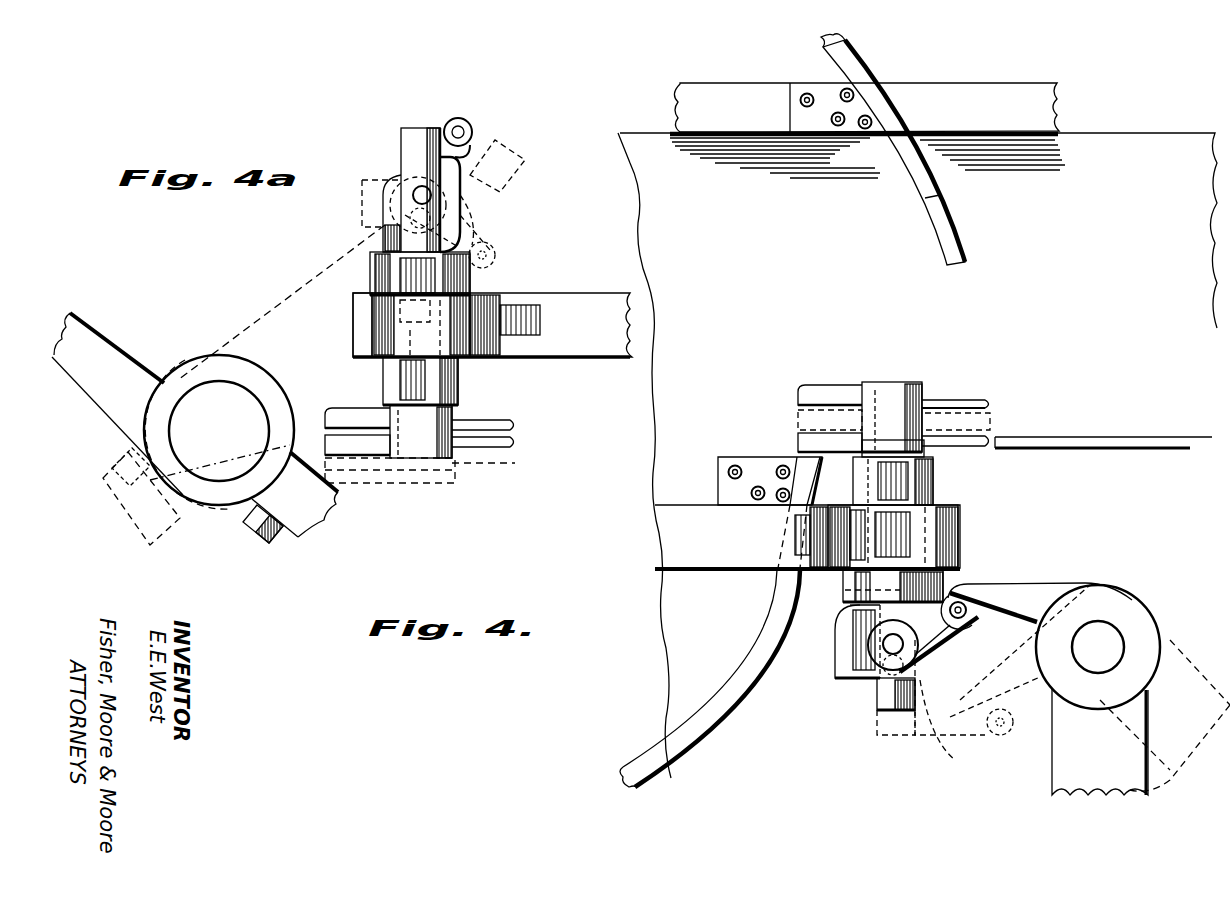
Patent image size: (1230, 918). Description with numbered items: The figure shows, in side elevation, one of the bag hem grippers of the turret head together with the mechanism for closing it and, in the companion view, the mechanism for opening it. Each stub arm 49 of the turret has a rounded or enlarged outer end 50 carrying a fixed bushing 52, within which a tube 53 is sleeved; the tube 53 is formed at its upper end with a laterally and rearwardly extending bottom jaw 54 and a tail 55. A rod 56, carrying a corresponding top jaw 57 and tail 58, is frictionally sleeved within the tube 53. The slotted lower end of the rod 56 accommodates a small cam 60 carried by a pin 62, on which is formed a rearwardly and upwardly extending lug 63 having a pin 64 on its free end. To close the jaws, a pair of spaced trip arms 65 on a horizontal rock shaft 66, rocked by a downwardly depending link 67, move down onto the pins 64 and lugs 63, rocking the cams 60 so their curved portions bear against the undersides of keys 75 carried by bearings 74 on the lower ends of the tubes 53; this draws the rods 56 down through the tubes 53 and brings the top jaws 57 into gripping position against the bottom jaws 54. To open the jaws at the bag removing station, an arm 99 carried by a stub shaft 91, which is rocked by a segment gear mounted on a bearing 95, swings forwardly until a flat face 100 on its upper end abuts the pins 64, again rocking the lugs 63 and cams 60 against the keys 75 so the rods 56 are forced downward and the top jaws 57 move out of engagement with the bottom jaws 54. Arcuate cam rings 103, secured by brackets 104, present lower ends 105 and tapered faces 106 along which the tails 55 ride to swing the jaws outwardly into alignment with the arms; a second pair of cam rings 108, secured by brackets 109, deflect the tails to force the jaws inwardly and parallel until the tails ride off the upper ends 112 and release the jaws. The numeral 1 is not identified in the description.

In FIG. 4, the shaft 1 is at (1160, 445).
In FIG. 4A, the stub arms 49 is at (492, 325).
In FIG. 4, the stub arms 49 is at (807, 537).
In FIG. 4A, the rounded or enlarged outer end 50 is at (360, 322).
In FIG. 4, the rounded or enlarged outer end 50 is at (948, 530).
In FIG. 4A, the bushing or sleeve 52 is at (452, 381).
In FIG. 4, the bushing or sleeve 52 is at (930, 488).
In FIG. 4A, the tube 53 is at (421, 431).
In FIG. 4, the tube 53 is at (893, 446).
In FIG. 4A, the jaw or finger 54 is at (510, 424).
In FIG. 4, the jaw or finger 54 is at (972, 445).
In FIG. 4A, the tail 55 is at (335, 410).
In FIG. 4, the tail 55 is at (805, 438).
In FIG. 4A, the rod 56 is at (416, 137).
In FIG. 4, the rod 56 is at (888, 415).
In FIG. 4A, the jaw or finger 57 is at (512, 445).
In FIG. 4, the jaw or finger 57 is at (968, 405).
In FIG. 4A, the tail 58 is at (362, 445).
In FIG. 4, the tail 58 is at (810, 390).
In FIG. 4A, the cam 60 is at (384, 205).
In FIG. 4, the cam 60 is at (842, 652).
In FIG. 4A, the pin 62 is at (418, 193).
In FIG. 4, the pin 62 is at (890, 645).
In FIG. 4A, the lug 63 is at (472, 145).
In FIG. 4, the lug 63 is at (940, 640).
In FIG. 4A, the pin 64 is at (462, 130).
In FIG. 4, the pin 64 is at (962, 604).
In FIG. 4, the trip arms 65 is at (1045, 588).
In FIG. 4, the rock shaft 66 is at (1105, 640).
In FIG. 4, the link 67 is at (1075, 765).
In FIG. 4A, the bearing 74 is at (472, 275).
In FIG. 4, the bearing 74 is at (850, 585).
In FIG. 4, the key 75 is at (850, 608).
In FIG. 4A, the stub shaft 91 is at (219, 432).
In FIG. 4A, the bearing 95 is at (210, 495).
In FIG. 4A, the arm 99 is at (90, 345).
In FIG. 4A, the flat face 100 is at (505, 172).
In FIG. 4, the cam rings 103 is at (840, 62).
In FIG. 4, the brackets 104 is at (790, 108).
In FIG. 4, the lower ends 105 is at (958, 265).
In FIG. 4, the tapered or beveled faces 106 is at (940, 197).
In FIG. 4, the cam rings 108 is at (688, 738).
In FIG. 4, the brackets 109 is at (718, 478).
In FIG. 4, the upper ends 112 is at (808, 468).